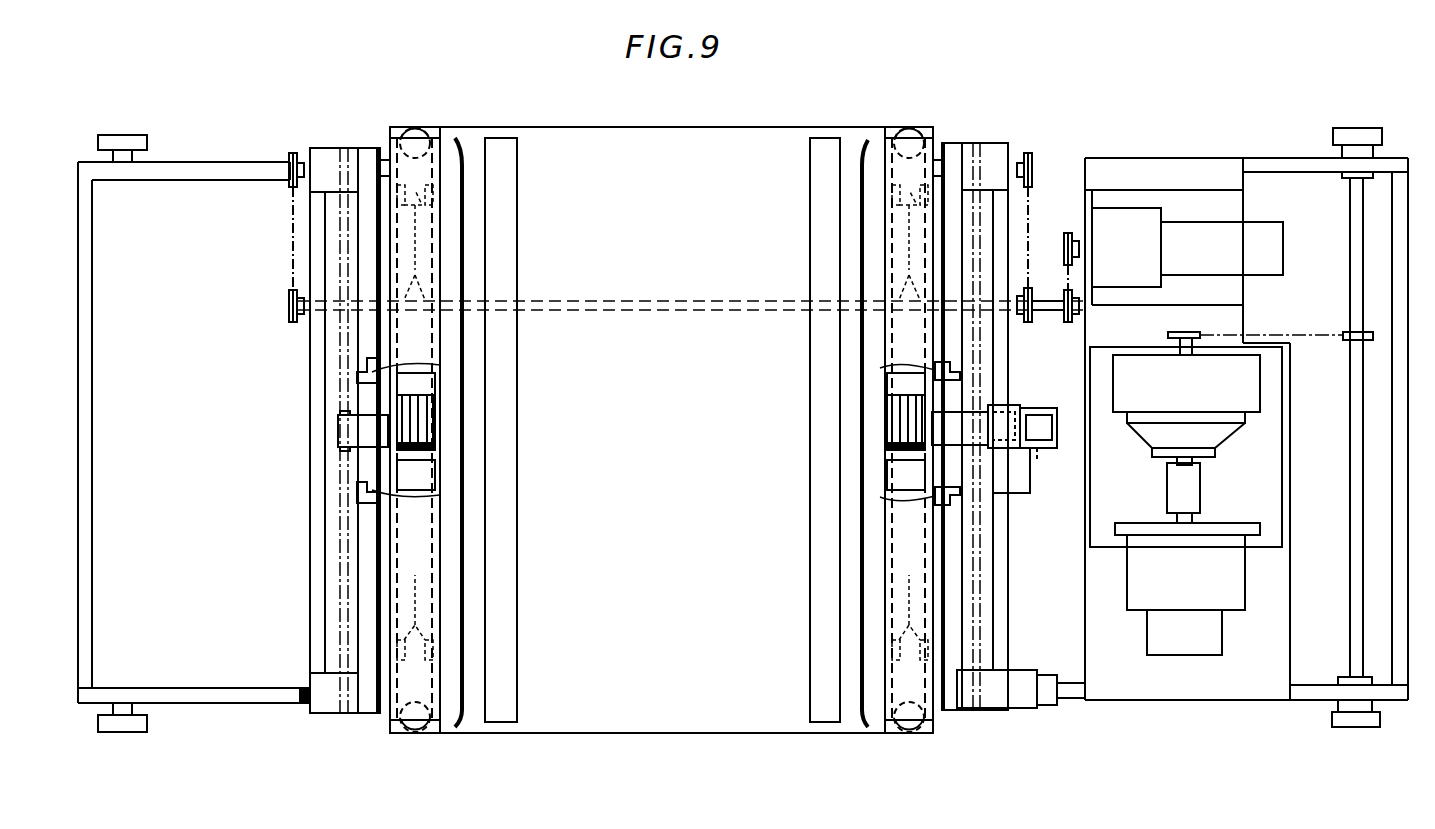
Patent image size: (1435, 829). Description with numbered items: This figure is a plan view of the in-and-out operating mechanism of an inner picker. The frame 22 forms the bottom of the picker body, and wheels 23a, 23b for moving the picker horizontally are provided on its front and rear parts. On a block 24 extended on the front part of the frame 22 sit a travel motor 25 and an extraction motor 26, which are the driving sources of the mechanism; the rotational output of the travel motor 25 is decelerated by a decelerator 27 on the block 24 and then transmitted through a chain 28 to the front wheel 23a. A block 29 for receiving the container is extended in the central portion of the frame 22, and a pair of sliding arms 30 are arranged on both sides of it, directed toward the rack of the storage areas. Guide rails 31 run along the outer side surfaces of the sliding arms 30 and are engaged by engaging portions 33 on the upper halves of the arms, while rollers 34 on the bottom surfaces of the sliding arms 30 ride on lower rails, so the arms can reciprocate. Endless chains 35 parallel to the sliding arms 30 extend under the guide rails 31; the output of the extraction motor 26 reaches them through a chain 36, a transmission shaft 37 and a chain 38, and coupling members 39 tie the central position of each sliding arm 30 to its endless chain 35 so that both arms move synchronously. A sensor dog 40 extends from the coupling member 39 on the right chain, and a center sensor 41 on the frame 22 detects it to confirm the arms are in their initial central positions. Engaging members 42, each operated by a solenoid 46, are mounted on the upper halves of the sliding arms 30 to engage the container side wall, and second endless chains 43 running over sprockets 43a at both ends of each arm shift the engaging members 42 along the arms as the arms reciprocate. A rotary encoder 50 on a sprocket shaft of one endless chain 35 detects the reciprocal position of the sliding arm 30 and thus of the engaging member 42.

The frame 22 is at (205, 165).
The wheel 23a is at (1359, 136).
The wheel 23b is at (133, 142).
The block 24 is at (1282, 597).
The travel motor 25 is at (1136, 600).
The extraction motor 26 is at (1283, 238).
The decelerator 27 is at (1228, 432).
The chain 28 is at (1270, 334).
The block 29 is at (641, 148).
The sliding arm 30 is at (447, 163).
The guide rail 31 is at (378, 188).
The engaging portion 33 is at (372, 372).
The roller 34 is at (662, 422).
The endless chain 35 is at (337, 468).
The chain 36 is at (1058, 270).
The transmission shaft 37 is at (686, 306).
The chain 38 is at (1060, 142).
The coupling member 39 is at (340, 428).
The sensor dog 40 is at (1023, 412).
The center sensor 41 is at (1036, 438).
The engaging member 42 is at (437, 441).
The second endless chain 43 is at (432, 582).
The sprocket 43a is at (405, 132).
The solenoid 46 is at (422, 468).
The rotary encoder 50 is at (1048, 682).